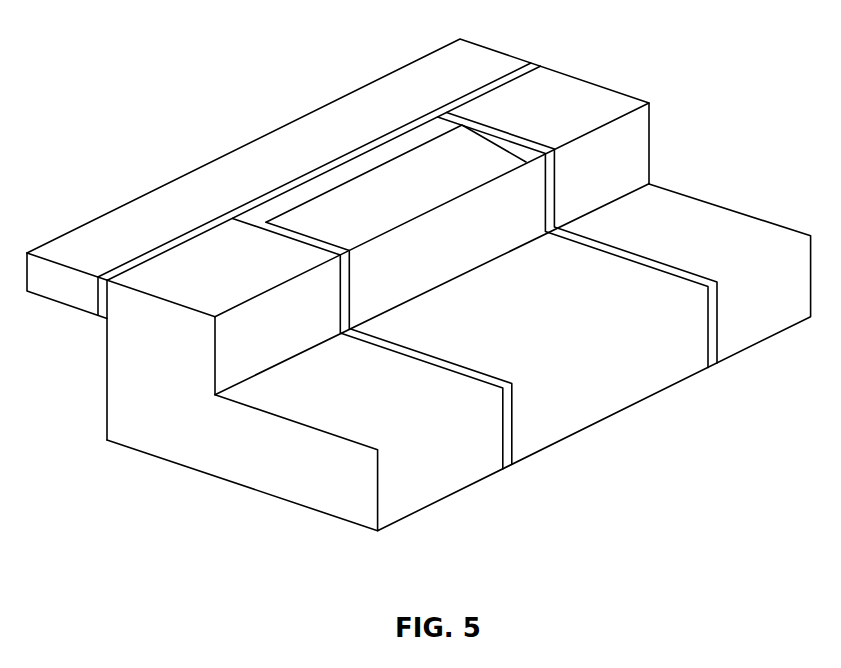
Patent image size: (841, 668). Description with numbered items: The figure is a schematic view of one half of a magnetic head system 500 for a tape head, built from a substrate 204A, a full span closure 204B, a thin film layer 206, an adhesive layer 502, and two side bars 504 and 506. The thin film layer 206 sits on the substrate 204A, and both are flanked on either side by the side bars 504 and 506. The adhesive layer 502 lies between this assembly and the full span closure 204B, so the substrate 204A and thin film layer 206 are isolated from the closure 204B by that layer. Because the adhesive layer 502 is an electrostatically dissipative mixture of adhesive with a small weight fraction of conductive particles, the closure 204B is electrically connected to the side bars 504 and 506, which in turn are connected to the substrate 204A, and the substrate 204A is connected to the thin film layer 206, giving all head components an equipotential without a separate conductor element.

The magnetic head system 500 is at (427, 296).
The adhesive layer 502 is at (330, 160).
The side bar 504 is at (117, 445).
The side bar 506 is at (742, 210).
The substrate 204A is at (605, 385).
The full span closure 204B is at (325, 123).
The thin film layer 206 is at (298, 200).